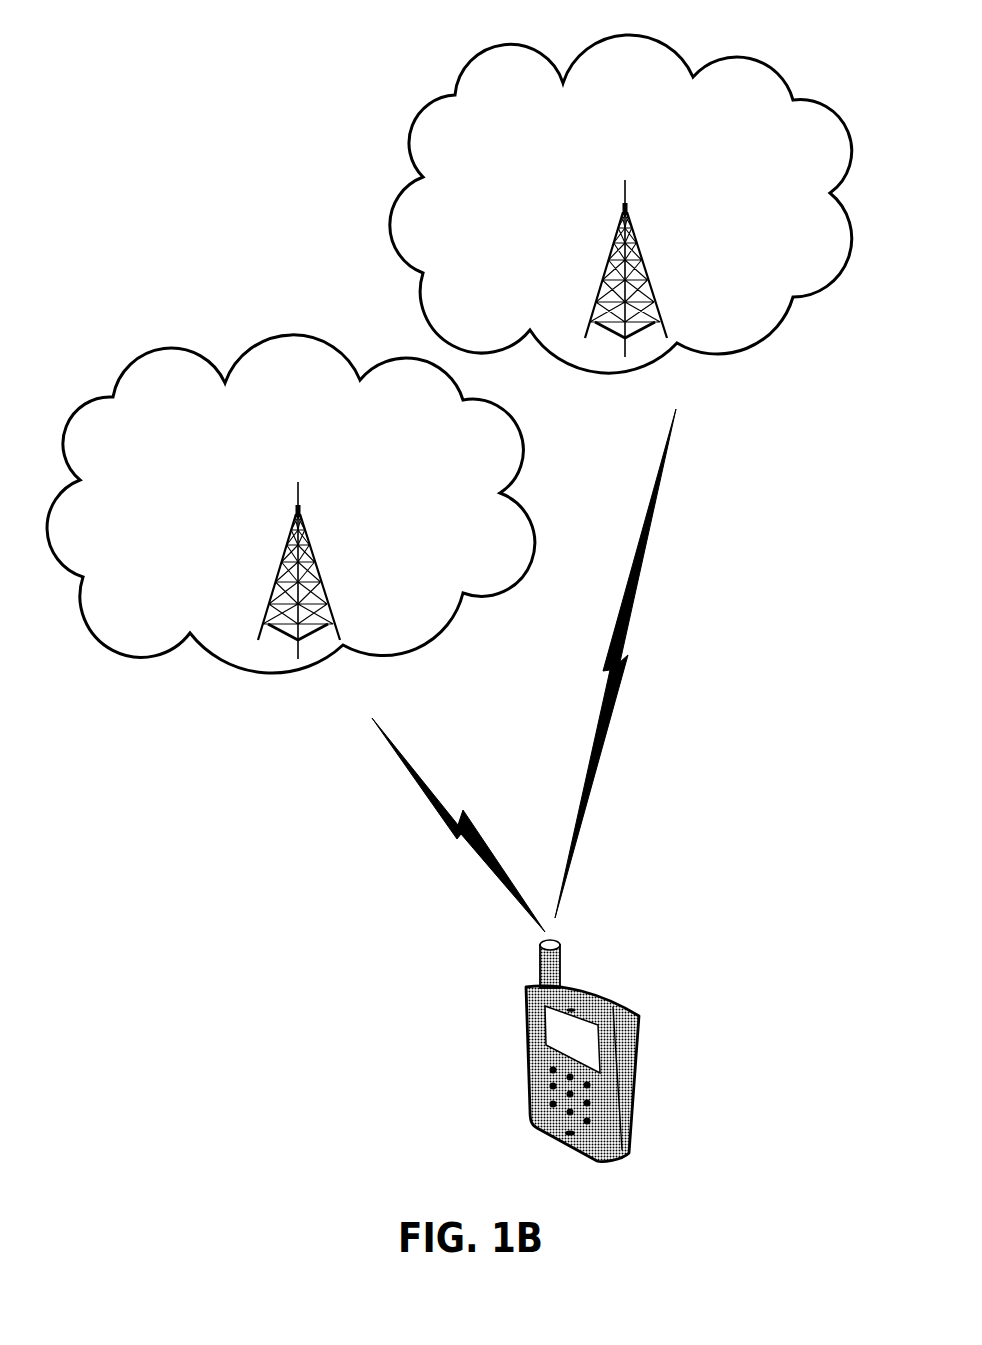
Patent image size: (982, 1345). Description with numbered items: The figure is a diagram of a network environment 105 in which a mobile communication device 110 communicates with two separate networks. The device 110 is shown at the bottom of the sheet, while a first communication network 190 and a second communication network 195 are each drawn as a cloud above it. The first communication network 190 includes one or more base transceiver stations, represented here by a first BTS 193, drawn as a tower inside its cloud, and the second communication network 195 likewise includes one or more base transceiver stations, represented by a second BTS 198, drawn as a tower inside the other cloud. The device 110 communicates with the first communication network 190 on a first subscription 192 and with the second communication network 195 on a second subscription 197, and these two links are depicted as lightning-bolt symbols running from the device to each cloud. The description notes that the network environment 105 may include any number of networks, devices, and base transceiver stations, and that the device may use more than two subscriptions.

The network environment 105 is at (139, 106).
The mobile device 110 is at (640, 1058).
The first communication network 190 is at (312, 464).
The first subscription 192 is at (490, 836).
The first BTS 193 is at (273, 593).
The second communication network 195 is at (644, 162).
The second subscription 197 is at (613, 709).
The second BTS 198 is at (643, 268).